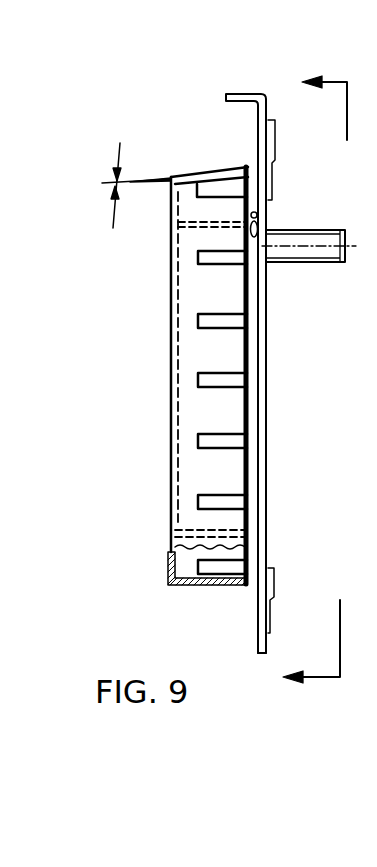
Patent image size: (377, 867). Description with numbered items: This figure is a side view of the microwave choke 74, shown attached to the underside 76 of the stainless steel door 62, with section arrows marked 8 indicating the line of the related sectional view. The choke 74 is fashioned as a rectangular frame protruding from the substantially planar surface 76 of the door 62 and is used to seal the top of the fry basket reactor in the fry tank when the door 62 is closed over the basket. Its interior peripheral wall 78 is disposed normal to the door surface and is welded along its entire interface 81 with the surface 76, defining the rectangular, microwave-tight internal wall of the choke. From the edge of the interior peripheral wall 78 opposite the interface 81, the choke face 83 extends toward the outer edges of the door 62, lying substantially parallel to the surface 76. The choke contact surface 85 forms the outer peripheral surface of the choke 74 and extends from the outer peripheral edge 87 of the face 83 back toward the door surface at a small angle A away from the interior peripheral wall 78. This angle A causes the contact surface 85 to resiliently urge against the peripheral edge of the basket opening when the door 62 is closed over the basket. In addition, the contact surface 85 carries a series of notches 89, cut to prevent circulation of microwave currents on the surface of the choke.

The section line 8- 8 is at (315, 378).
The angle A is at (127, 185).
The door 62 is at (267, 498).
The microwave choke 74 is at (158, 376).
The underside 76 is at (257, 620).
The interior peripheral wall 78 is at (252, 440).
The interface 81 is at (259, 215).
The choke face 83 is at (172, 460).
The choke contact surface 85 is at (231, 407).
The outer peripheral edge 87 is at (172, 313).
The notches 89 is at (232, 257).